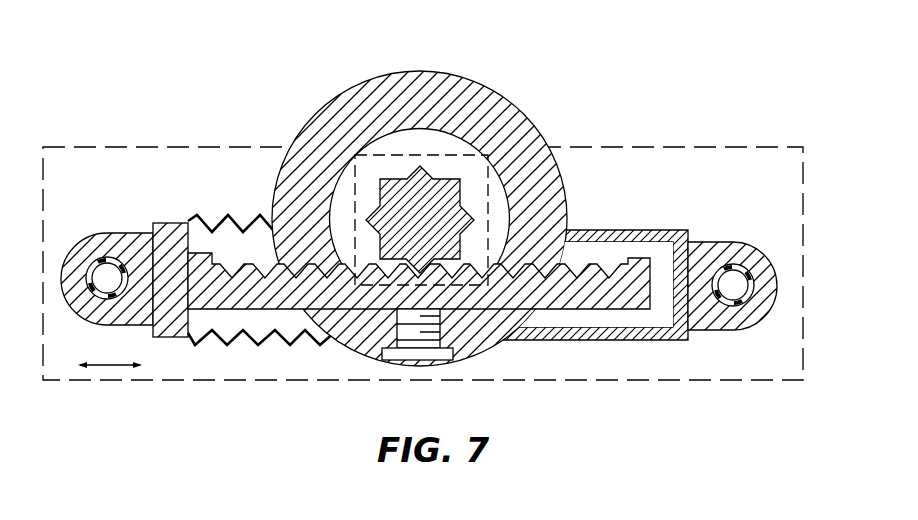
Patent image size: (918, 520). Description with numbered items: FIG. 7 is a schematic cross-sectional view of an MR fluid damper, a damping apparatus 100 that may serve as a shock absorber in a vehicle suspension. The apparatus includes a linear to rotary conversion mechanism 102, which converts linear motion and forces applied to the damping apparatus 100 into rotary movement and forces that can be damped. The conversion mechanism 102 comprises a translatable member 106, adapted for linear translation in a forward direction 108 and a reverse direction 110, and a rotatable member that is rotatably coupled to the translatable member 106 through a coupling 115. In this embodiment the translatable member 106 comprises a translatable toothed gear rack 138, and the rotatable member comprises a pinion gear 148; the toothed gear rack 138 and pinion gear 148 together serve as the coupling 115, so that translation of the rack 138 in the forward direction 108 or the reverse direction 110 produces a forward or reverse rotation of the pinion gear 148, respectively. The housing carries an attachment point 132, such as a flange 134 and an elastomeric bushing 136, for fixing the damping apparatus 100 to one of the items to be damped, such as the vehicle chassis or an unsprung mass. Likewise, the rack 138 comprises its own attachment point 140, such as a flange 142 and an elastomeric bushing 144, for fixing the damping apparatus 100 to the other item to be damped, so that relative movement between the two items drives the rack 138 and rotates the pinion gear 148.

The damping apparatus 100 is at (423, 197).
The linear to rotary conversion mechanism 102 is at (580, 144).
The translatable member 106 is at (423, 242).
The forward direction 108 is at (92, 364).
The reverse direction 110 is at (155, 364).
The coupling 115 is at (493, 194).
The attachment point 132 is at (112, 233).
The flange 134 is at (120, 245).
The elastomeric bushing 136 is at (82, 270).
The translatable toothed gear rack 138 is at (568, 266).
The attachment point 140 is at (762, 242).
The flange 142 is at (768, 270).
The elastomeric bushing 144 is at (752, 295).
The pinion gear 148 is at (432, 190).